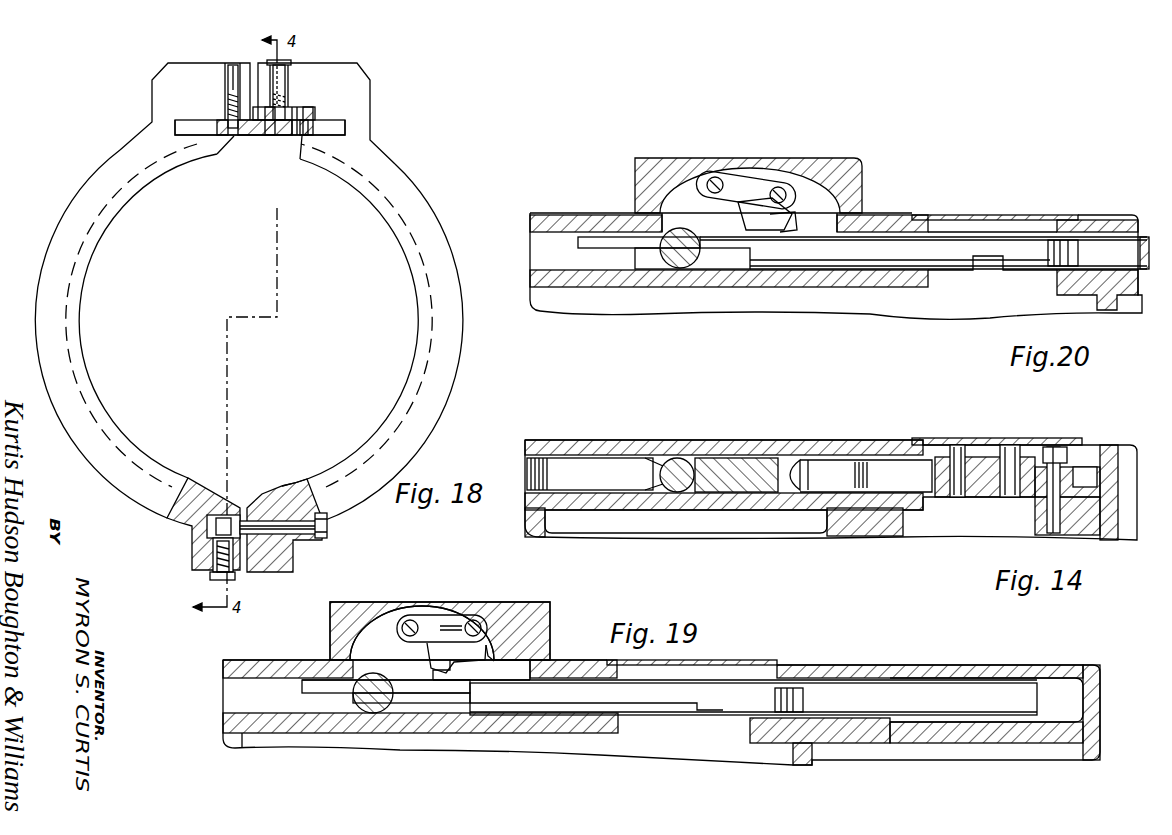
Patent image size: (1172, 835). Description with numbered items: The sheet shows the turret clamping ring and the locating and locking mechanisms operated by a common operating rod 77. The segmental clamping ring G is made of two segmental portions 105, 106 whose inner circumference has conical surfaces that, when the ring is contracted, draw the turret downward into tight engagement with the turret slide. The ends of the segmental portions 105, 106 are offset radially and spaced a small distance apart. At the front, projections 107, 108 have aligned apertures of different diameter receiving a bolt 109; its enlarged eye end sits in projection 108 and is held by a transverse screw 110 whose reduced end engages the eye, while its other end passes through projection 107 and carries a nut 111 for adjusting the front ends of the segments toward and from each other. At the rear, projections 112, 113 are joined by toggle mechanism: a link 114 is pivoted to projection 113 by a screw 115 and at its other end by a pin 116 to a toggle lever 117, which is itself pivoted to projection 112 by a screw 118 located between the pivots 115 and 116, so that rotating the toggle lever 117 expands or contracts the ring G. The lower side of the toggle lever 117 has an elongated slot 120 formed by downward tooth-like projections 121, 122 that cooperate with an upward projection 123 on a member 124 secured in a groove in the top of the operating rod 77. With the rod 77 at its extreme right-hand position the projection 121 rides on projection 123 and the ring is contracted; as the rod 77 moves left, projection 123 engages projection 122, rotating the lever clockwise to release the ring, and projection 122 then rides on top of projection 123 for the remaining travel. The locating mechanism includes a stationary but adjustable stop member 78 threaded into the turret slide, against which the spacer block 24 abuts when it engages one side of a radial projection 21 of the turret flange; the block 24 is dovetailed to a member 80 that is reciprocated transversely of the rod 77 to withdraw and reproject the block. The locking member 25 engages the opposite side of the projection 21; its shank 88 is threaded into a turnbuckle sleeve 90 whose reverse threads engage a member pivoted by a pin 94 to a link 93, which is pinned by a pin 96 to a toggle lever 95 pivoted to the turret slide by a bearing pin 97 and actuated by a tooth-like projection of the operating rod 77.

In FIG. 18, the segmental portion 105 is at (420, 222).
In FIG. 18, the segmental portion 106 is at (85, 197).
In FIG. 18, the segmental clamping ring G is at (380, 172).
In FIG. 18, the rear projection 113 is at (172, 97).
In FIG. 18, the rear projection 112 is at (357, 110).
In FIG. 18, the link 114 is at (238, 136).
In FIG. 20, the link 114 is at (728, 183).
In FIG. 19, the link 114 is at (430, 623).
In FIG. 18, the screw 115 is at (232, 78).
In FIG. 18, the pin 116 is at (290, 137).
In FIG. 20, the pin 116 is at (855, 178).
In FIG. 18, the toggle lever 117 is at (305, 107).
In FIG. 20, the toggle lever 117 is at (762, 190).
In FIG. 19, the toggle lever 117 is at (432, 648).
In FIG. 18, the screw 118 is at (288, 78).
In FIG. 18, the forward projection 107 is at (290, 558).
In FIG. 18, the forward projection 108 is at (205, 540).
In FIG. 18, the bolt 109 is at (262, 522).
In FIG. 18, the screw 110 is at (210, 577).
In FIG. 18, the nut 111 is at (327, 524).
In FIG. 20, the operating rod 77 is at (1147, 237).
In FIG. 19, the operating rod 77 is at (960, 690).
In FIG. 20, the member 80 is at (680, 268).
In FIG. 19, the member 80 is at (373, 714).
In FIG. 19, the elongated slot 120 is at (495, 642).
In FIG. 20, the projection 121 is at (777, 220).
In FIG. 19, the projection 121 is at (495, 648).
In FIG. 20, the projection 122 is at (733, 196).
In FIG. 19, the projection 122 is at (445, 656).
In FIG. 19, the projection 123 is at (512, 660).
In FIG. 19, the member 124 is at (505, 672).
In FIG. 14, the stop member 78 is at (607, 473).
In FIG. 14, the spacer block 24 is at (680, 468).
In FIG. 14, the radial projection 21 is at (740, 470).
In FIG. 14, the locking member 25 is at (823, 468).
In FIG. 14, the shank 88 is at (852, 462).
In FIG. 14, the turnbuckle sleeve 90 is at (907, 483).
In FIG. 14, the link 93 is at (980, 497).
In FIG. 14, the pin 94 is at (955, 458).
In FIG. 14, the toggle lever 95 is at (1037, 485).
In FIG. 14, the pin 96 is at (1008, 462).
In FIG. 14, the bearing pin 97 is at (1050, 463).